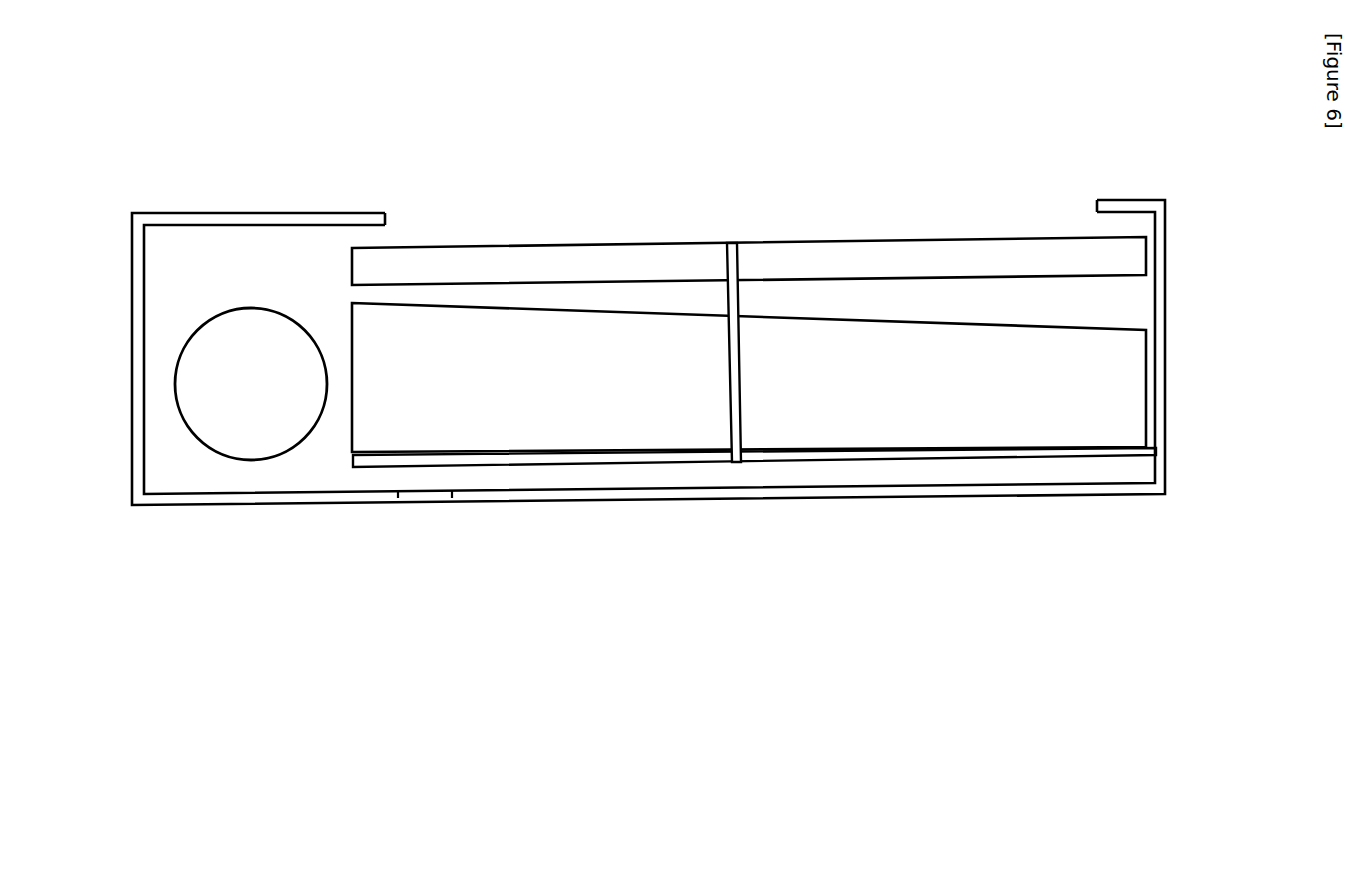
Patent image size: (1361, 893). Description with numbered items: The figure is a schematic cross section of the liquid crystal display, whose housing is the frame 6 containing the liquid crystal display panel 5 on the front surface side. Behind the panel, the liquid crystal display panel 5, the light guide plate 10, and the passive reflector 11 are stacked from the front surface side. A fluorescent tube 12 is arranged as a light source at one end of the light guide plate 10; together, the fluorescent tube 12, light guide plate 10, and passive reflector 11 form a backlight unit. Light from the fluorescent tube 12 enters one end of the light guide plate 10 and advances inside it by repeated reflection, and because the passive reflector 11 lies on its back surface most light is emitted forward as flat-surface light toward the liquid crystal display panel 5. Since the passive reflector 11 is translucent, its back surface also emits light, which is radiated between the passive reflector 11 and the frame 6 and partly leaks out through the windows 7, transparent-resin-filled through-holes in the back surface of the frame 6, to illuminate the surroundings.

The liquid crystal display panel 5 is at (1146, 250).
The frame 6 is at (910, 495).
The window 7 is at (420, 500).
The light guide plate 10 is at (1148, 385).
The passive reflector 11 is at (1153, 455).
The fluorescent tube 12 is at (185, 345).